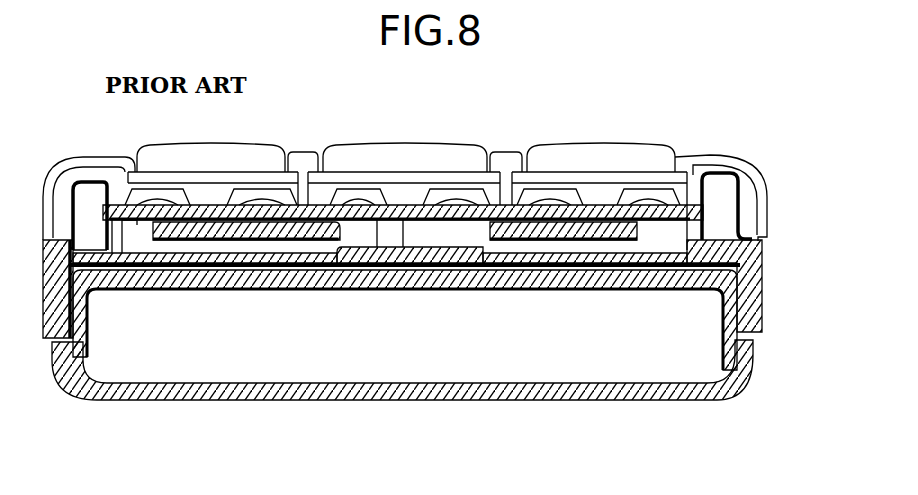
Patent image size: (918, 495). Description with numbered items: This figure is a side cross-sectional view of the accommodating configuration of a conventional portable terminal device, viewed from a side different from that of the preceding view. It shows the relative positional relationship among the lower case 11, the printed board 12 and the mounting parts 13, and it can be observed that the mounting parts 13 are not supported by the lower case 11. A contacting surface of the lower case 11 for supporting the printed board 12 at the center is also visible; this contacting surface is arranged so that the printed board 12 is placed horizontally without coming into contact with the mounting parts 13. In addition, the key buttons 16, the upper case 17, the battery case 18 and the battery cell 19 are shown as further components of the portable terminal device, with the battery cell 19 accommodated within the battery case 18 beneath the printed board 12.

The lower case 11 is at (483, 246).
The printed board 12 is at (666, 222).
The mounting parts 13 is at (545, 217).
The key buttons 16 is at (598, 156).
The upper case 17 is at (750, 204).
The battery case 18 is at (660, 276).
The battery cell 19 is at (386, 356).